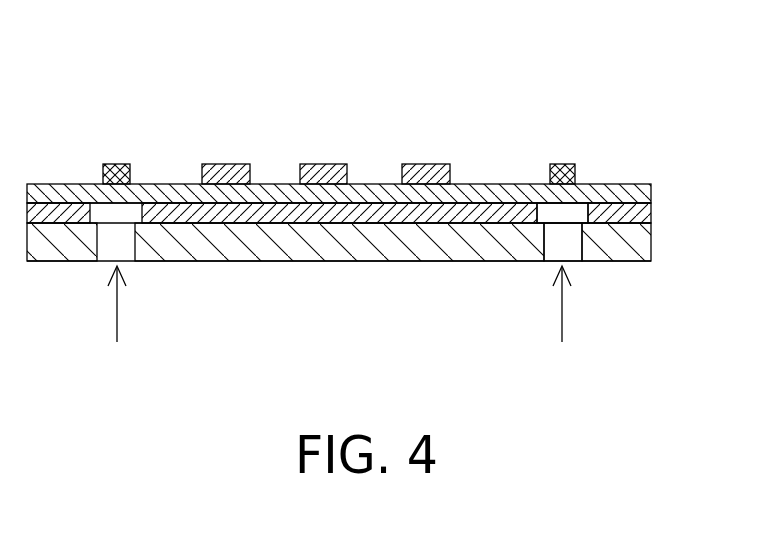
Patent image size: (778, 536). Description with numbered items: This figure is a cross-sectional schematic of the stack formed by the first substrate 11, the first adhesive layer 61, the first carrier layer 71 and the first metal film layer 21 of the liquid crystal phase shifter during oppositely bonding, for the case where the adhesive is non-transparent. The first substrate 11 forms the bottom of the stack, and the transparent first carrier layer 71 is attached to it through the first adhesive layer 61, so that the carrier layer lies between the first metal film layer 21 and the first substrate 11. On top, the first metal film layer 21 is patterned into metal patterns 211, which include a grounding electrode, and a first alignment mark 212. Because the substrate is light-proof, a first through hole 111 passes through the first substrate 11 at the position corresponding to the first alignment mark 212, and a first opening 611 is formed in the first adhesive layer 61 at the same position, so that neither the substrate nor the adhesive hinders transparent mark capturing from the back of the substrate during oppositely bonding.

The first substrate 11 is at (393, 258).
The first through hole 111 is at (575, 258).
The first adhesive layer 61 is at (299, 234).
The first opening 611 is at (579, 194).
The first carrier layer 71 is at (339, 142).
The first metal film layer 21 is at (354, 95).
The metal patterns 211 is at (331, 152).
The first alignment mark 212 is at (577, 136).